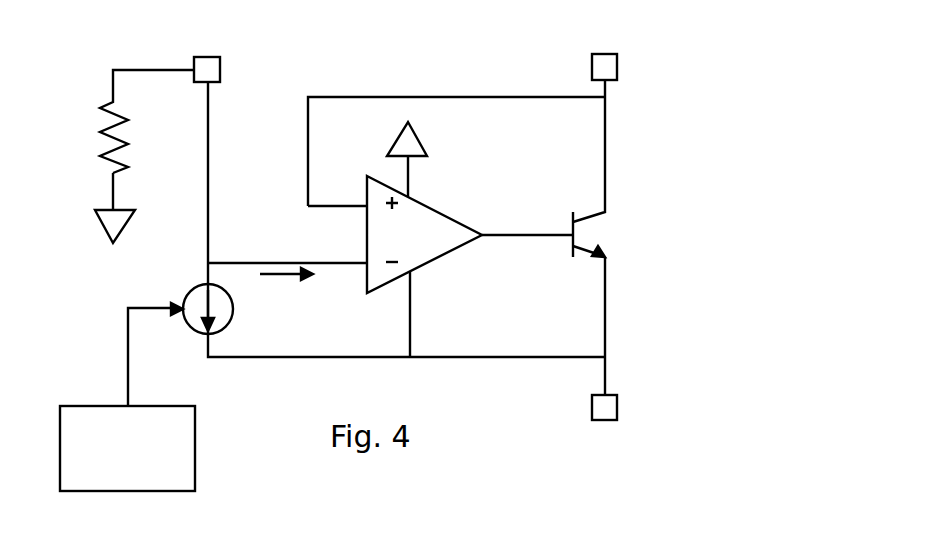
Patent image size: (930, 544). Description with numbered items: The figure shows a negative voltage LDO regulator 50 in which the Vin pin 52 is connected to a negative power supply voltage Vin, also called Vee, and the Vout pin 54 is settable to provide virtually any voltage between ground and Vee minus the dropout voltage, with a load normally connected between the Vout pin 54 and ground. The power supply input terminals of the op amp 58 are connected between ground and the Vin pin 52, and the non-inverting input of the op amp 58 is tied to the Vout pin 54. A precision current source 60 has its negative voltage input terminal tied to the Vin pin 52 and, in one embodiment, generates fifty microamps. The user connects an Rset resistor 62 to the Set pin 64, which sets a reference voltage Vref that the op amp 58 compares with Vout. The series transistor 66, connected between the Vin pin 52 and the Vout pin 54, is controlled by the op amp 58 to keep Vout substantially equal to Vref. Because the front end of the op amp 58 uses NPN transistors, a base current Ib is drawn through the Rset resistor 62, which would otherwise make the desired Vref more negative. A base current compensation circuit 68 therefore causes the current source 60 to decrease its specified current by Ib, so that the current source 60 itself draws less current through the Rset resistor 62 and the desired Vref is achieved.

The negative voltage LDO regulator 50 is at (757, 78).
The Vin pin 52 is at (590, 403).
The Vout pin 54 is at (618, 70).
The op amp 58 is at (438, 208).
The precision current source 60 is at (190, 290).
The Rset resistor 62 is at (132, 138).
The Set pin 64 is at (220, 70).
The series transistor 66 is at (607, 230).
The base current compensation circuit 68 is at (85, 405).